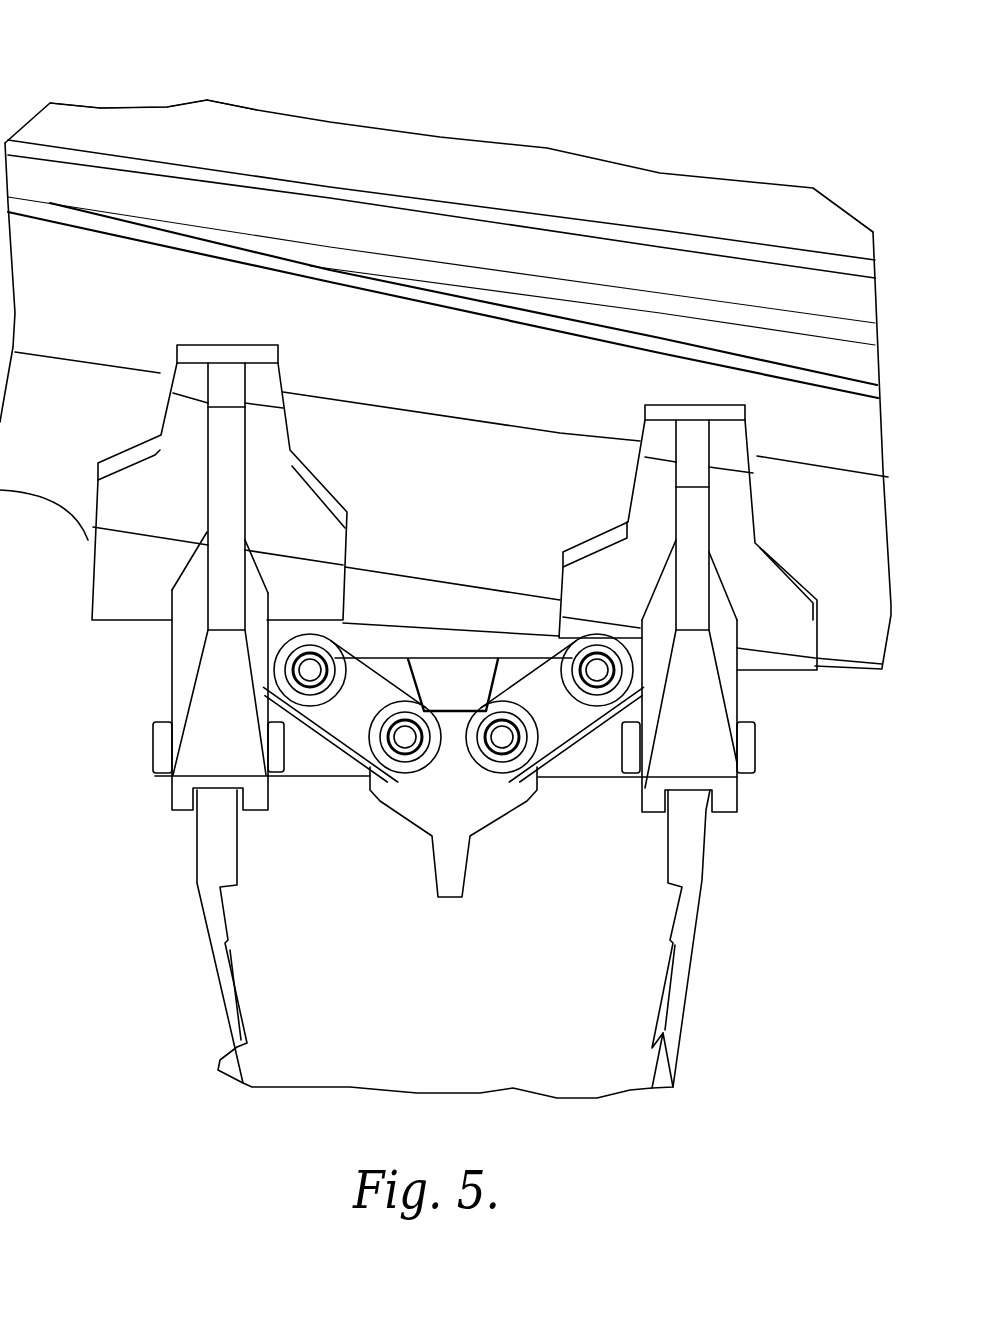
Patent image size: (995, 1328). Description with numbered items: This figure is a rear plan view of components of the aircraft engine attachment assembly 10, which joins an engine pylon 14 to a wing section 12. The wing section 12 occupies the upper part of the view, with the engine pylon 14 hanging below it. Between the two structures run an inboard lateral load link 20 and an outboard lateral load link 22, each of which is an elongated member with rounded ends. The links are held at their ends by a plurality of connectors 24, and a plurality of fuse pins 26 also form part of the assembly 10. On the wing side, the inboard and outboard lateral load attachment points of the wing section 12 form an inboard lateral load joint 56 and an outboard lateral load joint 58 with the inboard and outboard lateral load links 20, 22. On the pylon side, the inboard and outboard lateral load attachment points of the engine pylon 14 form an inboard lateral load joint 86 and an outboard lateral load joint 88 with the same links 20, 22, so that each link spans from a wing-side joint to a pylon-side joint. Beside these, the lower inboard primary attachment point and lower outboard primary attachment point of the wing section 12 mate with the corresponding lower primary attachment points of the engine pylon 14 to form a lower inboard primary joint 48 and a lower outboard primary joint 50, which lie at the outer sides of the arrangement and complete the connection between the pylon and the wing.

The aircraft engine attachment assembly 10 is at (243, 78).
The wing section 12 is at (678, 208).
The engine pylon 14 is at (258, 1010).
The inboard lateral load link 20 is at (588, 748).
The outboard lateral load link 22 is at (322, 745).
The connectors 24 is at (591, 670).
The fuse pins 26 is at (162, 760).
The lower inboard primary joint 48 is at (768, 738).
The lower outboard primary joint 50 is at (145, 727).
The inboard lateral load joint 56 is at (607, 634).
The outboard lateral load joint 58 is at (308, 638).
The inboard lateral load joint 86 is at (512, 786).
The outboard lateral load joint 88 is at (397, 786).